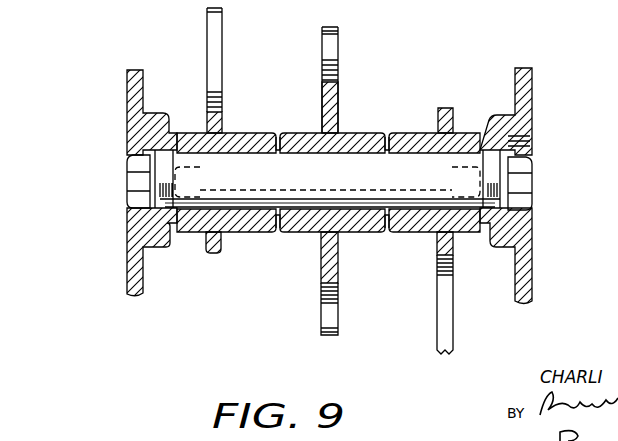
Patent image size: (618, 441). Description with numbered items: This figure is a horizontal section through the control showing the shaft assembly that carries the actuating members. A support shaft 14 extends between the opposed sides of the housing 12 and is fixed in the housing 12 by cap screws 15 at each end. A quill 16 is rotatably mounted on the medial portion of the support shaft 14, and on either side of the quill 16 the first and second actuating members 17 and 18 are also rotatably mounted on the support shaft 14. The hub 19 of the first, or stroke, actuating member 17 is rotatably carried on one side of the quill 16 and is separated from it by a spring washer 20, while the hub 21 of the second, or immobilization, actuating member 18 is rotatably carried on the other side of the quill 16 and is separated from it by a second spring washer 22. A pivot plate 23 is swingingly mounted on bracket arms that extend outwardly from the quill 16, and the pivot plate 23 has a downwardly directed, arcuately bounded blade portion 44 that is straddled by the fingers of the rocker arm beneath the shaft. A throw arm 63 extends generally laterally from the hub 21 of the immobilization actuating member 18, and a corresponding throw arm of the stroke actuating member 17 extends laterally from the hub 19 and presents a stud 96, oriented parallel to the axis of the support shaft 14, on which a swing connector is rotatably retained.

The housing 12 is at (128, 90).
The support shaft 14 is at (327, 179).
The cap screws 15 is at (136, 184).
The quill 16 is at (357, 130).
The first actuating member 17 is at (234, 120).
The second actuating member 18 is at (434, 241).
The hub 19 is at (252, 232).
The spring washer 20 is at (277, 133).
The hub 21 is at (415, 137).
The second spring washer 22 is at (386, 234).
The pivot plate 23 is at (317, 308).
The blade portion 44 is at (318, 199).
The throw arm 63 is at (447, 236).
The stud 96 is at (208, 130).